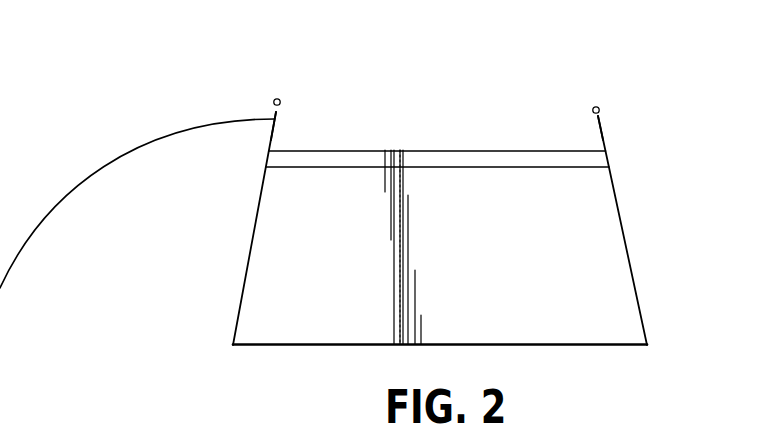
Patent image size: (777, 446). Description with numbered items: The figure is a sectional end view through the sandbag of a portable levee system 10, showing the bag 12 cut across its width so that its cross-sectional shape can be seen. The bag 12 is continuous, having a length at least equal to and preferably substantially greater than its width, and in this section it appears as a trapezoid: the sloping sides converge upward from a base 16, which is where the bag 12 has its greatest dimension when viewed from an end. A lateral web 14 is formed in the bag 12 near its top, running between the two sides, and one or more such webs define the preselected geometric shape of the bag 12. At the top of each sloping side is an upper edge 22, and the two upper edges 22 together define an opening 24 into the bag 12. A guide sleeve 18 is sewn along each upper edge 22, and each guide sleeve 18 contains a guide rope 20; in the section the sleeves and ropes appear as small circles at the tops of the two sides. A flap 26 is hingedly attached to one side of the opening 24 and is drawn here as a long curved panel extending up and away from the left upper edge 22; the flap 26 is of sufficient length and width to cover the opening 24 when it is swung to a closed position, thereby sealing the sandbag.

The portable levee system 10 is at (212, 104).
The bag 12 is at (643, 252).
The lateral web 14 is at (500, 158).
The base 16 is at (567, 345).
The guide sleeve 18 is at (277, 98).
The guide rope 20 is at (599, 108).
The upper edge 22 is at (280, 113).
The opening 24 is at (432, 143).
The flap 26 is at (127, 153).